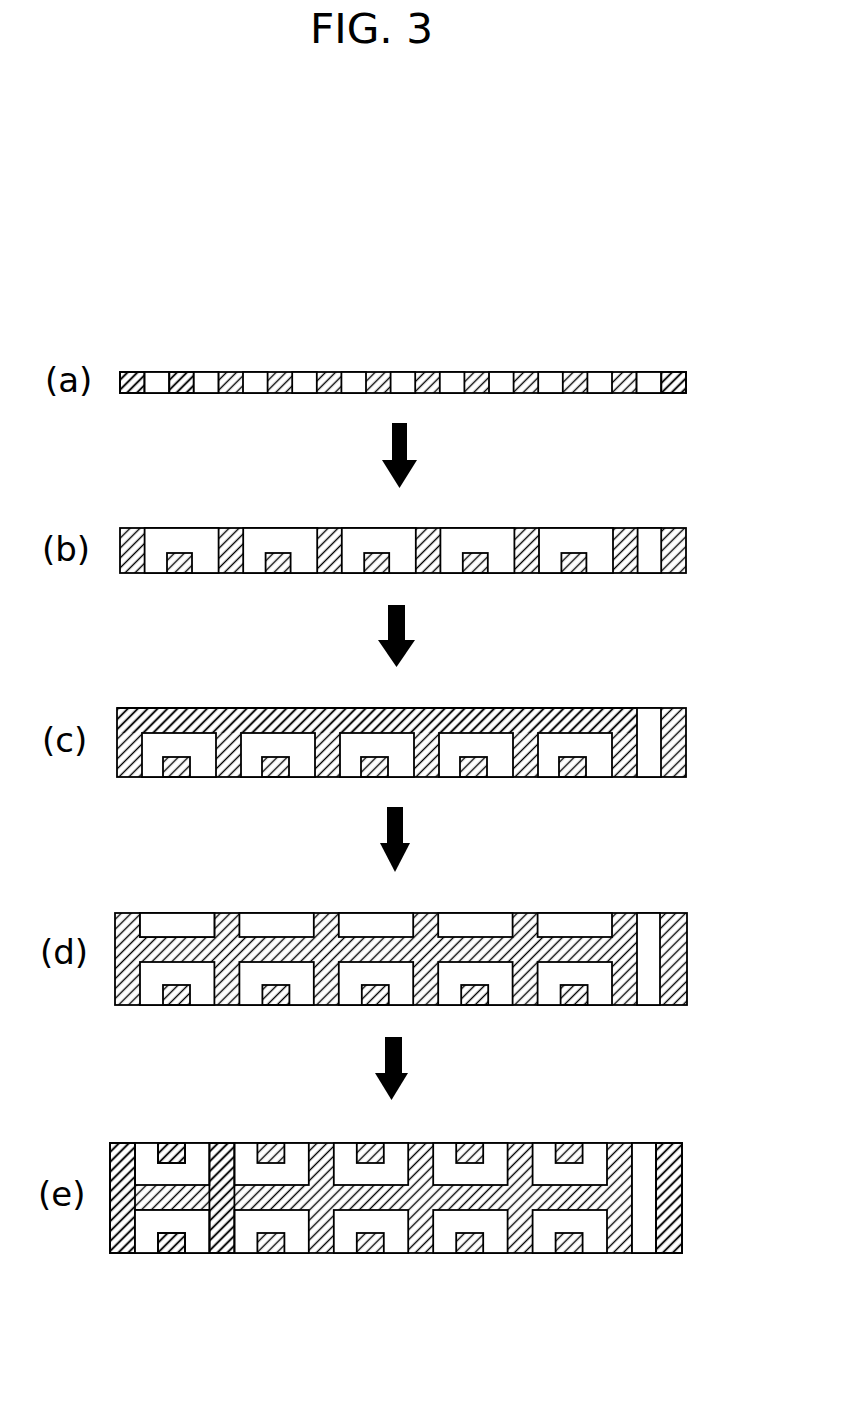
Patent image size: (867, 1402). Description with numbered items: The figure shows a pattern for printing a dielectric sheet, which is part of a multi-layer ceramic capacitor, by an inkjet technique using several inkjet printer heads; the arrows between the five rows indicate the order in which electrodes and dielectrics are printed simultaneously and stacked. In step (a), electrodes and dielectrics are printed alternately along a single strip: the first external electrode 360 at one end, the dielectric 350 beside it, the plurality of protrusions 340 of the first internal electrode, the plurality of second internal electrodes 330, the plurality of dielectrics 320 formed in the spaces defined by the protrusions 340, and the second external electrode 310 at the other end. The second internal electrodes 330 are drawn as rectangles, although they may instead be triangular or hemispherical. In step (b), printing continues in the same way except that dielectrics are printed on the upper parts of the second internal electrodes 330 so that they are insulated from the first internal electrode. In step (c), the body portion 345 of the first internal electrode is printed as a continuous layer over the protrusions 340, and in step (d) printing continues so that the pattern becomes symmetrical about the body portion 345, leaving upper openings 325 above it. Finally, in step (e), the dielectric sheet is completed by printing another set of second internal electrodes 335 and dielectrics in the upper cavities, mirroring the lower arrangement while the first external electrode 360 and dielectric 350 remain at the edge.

The second external electrode 310 is at (128, 372).
The dielectrics 320 is at (157, 372).
The second internal electrodes 330 is at (182, 372).
The protrusions of the first internal electrode 340 is at (237, 372).
The body portion of the first internal electrode 345 is at (193, 710).
The upper opening 325 is at (178, 922).
The second internal electrodes 335 is at (173, 1148).
The dielectric 350 is at (645, 372).
The first external electrode 360 is at (672, 372).